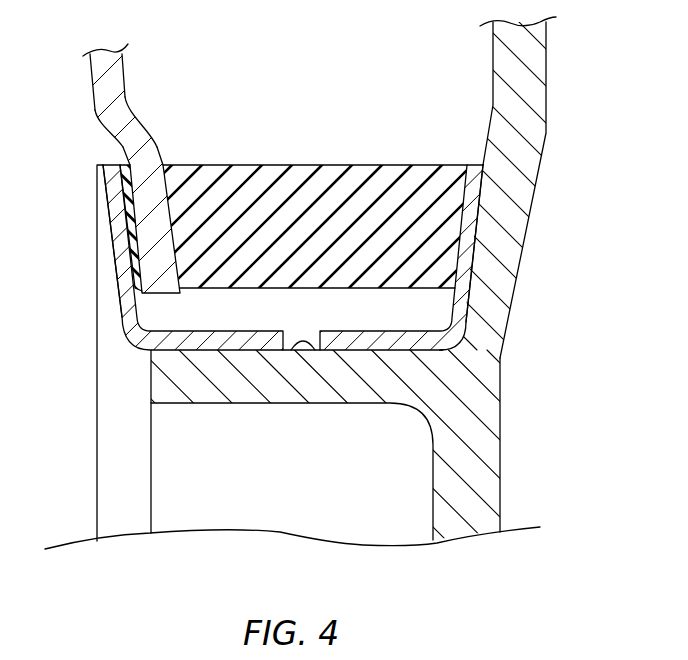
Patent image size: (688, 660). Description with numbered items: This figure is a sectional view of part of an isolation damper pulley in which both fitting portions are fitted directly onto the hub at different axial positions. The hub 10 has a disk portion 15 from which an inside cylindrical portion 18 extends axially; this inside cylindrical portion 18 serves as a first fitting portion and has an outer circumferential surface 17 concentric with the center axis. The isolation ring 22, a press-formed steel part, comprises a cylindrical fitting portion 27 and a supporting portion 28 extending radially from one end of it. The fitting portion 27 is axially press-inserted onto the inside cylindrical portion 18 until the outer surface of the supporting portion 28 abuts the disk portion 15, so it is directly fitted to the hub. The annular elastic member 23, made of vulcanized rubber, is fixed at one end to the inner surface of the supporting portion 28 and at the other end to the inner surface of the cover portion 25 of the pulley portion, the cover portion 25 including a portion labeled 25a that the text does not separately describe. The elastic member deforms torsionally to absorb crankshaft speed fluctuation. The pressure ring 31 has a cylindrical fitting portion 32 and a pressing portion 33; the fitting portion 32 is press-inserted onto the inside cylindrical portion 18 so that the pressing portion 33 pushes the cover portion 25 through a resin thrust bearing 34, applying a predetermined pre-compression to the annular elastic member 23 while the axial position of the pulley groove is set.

The hub 10 is at (578, 410).
The disk portion 15 is at (526, 82).
The outer circumferential surface 17 is at (305, 342).
The inside cylindrical portion 18 is at (355, 385).
The isolation ring 22 is at (474, 297).
The annular elastic member 23 is at (368, 190).
The cover portion 25 is at (110, 113).
The bent portion of terminal lead 25a is at (162, 155).
The cylindrical fitting portion 27 is at (399, 343).
The supporting portion 28 is at (468, 222).
The pressure ring 31 is at (117, 482).
The cylindrical fitting portion 32 is at (205, 343).
The pressing portion 33 is at (117, 233).
The thrust bearing 34 is at (121, 199).